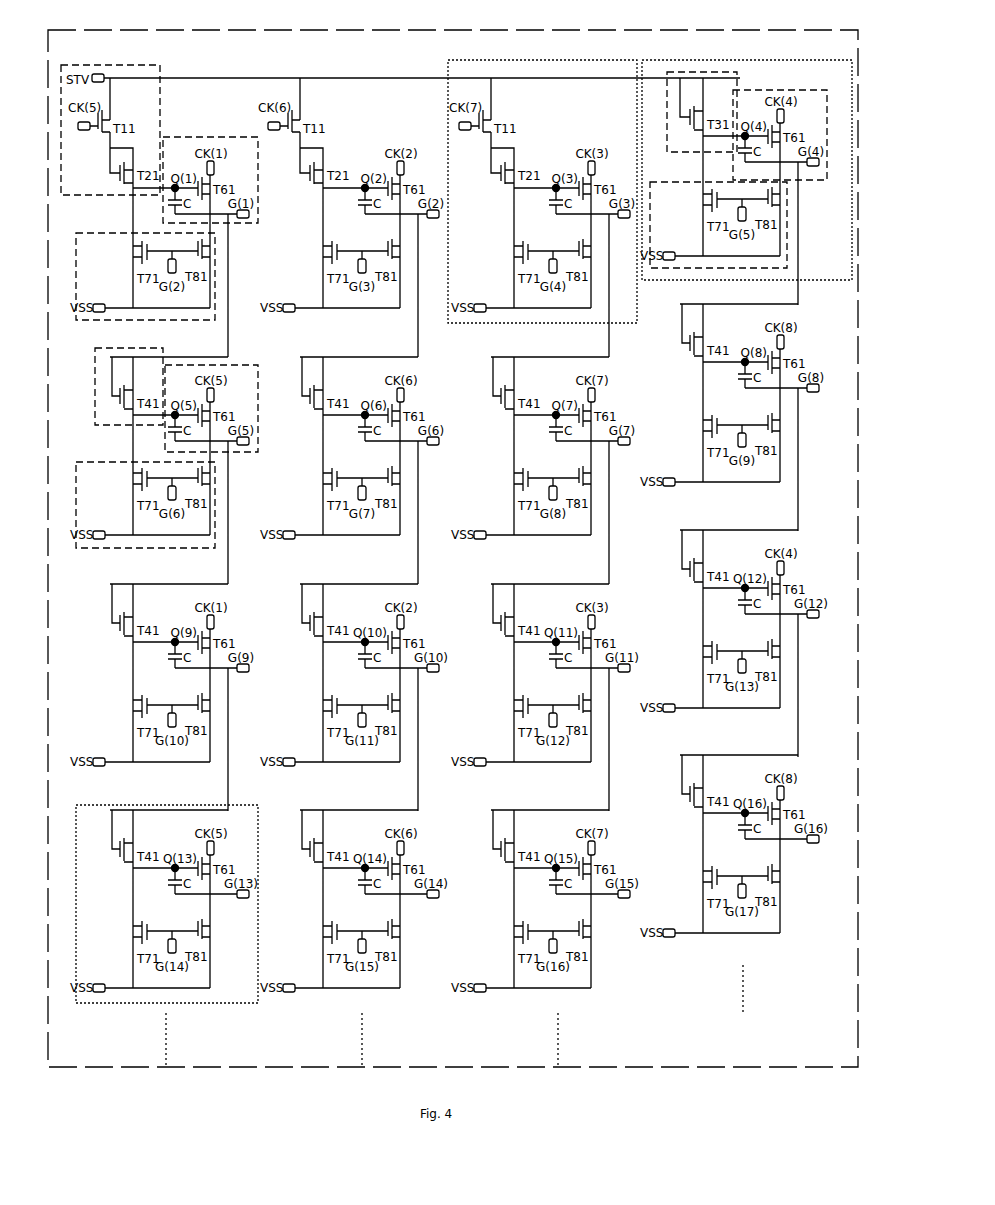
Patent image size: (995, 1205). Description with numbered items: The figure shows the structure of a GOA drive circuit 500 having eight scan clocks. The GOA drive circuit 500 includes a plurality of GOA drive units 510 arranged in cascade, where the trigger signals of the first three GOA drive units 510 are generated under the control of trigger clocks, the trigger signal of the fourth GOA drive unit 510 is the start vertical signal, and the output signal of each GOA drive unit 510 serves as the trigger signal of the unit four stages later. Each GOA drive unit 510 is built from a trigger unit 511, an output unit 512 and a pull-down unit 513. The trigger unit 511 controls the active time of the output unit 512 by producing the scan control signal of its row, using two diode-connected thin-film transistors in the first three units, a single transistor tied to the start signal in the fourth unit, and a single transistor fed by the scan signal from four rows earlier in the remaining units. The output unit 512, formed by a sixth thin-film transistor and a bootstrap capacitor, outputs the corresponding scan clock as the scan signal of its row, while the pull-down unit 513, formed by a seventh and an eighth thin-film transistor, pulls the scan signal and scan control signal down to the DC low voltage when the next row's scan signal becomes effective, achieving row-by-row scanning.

The GOA drive circuit 500 is at (440, 30).
The GOA drive unit 510 is at (555, 60).
The trigger unit 511 is at (108, 65).
The output unit 512 is at (212, 136).
The pull-down unit 513 is at (74, 278).